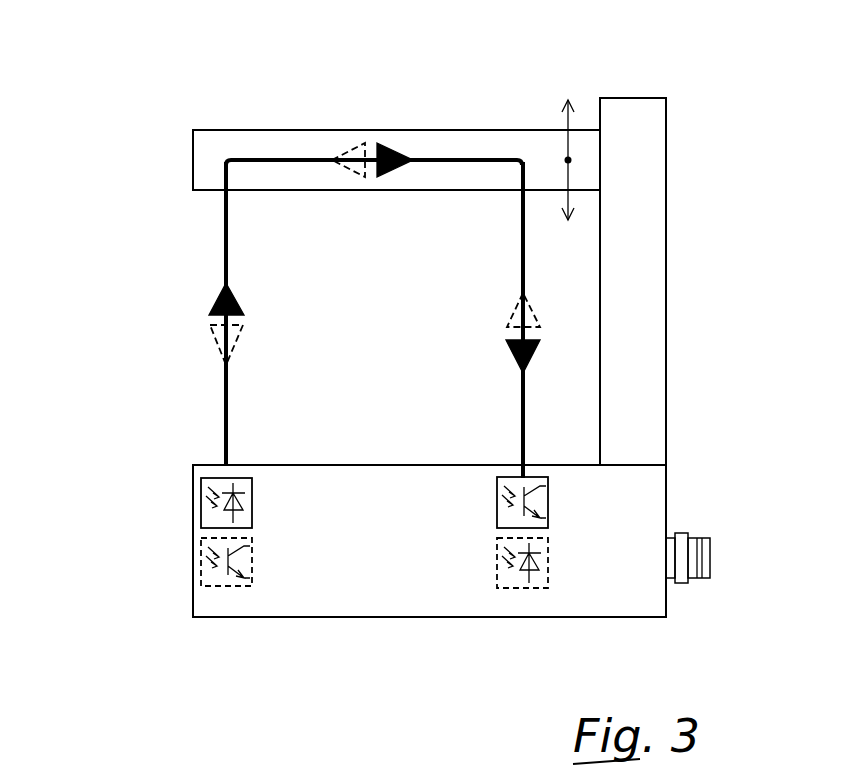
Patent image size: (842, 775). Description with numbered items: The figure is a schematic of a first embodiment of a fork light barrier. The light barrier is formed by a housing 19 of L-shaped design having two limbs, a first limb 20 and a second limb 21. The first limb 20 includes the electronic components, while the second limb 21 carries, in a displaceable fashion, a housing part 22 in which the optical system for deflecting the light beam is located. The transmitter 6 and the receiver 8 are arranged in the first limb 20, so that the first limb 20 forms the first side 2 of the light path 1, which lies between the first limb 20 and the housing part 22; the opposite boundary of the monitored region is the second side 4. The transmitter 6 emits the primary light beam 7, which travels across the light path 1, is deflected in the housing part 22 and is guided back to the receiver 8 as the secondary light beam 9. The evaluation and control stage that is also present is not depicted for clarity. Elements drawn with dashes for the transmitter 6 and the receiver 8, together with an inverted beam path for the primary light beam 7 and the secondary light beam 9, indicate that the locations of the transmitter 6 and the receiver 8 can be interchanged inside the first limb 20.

The light path 1 is at (175, 333).
The first side 2 is at (175, 558).
The second side 4 is at (172, 158).
The transmitter 6 is at (250, 485).
The primary light beam 7 is at (236, 297).
The receiver 8 is at (252, 565).
The secondary light beam 9 is at (237, 340).
The housing 19 is at (666, 462).
The first limb 20 is at (358, 595).
The second limb 21 is at (650, 266).
The housing part 22 is at (462, 132).